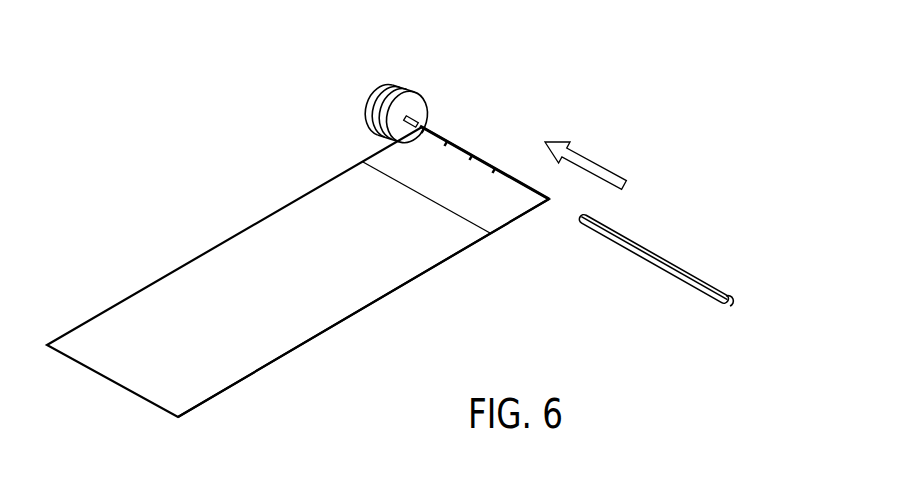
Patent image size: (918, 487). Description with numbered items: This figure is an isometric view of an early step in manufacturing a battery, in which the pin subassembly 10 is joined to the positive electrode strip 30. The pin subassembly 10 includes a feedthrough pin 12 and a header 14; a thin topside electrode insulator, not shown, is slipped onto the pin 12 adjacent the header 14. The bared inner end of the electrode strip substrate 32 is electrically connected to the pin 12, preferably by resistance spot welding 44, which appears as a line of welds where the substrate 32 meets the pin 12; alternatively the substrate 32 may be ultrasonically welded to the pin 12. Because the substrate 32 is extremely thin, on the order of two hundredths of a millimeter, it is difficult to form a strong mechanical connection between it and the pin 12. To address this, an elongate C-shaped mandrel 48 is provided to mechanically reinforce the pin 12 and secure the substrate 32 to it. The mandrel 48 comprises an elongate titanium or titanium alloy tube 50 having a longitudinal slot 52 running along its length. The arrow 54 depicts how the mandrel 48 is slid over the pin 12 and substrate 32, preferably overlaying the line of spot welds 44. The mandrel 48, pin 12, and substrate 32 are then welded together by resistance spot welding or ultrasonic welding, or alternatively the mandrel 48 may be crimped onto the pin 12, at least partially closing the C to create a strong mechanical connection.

The pin subassembly 10 is at (432, 62).
The pin 12 is at (420, 128).
The header 14 is at (349, 124).
The positive electrode strip 30 is at (152, 110).
The electrode strip substrate 32 is at (512, 221).
The resistance spot welding 44 is at (472, 157).
The C-shaped mandrel 48 is at (727, 199).
The tube 50 is at (729, 307).
The longitudinal slot 52 is at (697, 273).
The arrow 54 is at (597, 167).